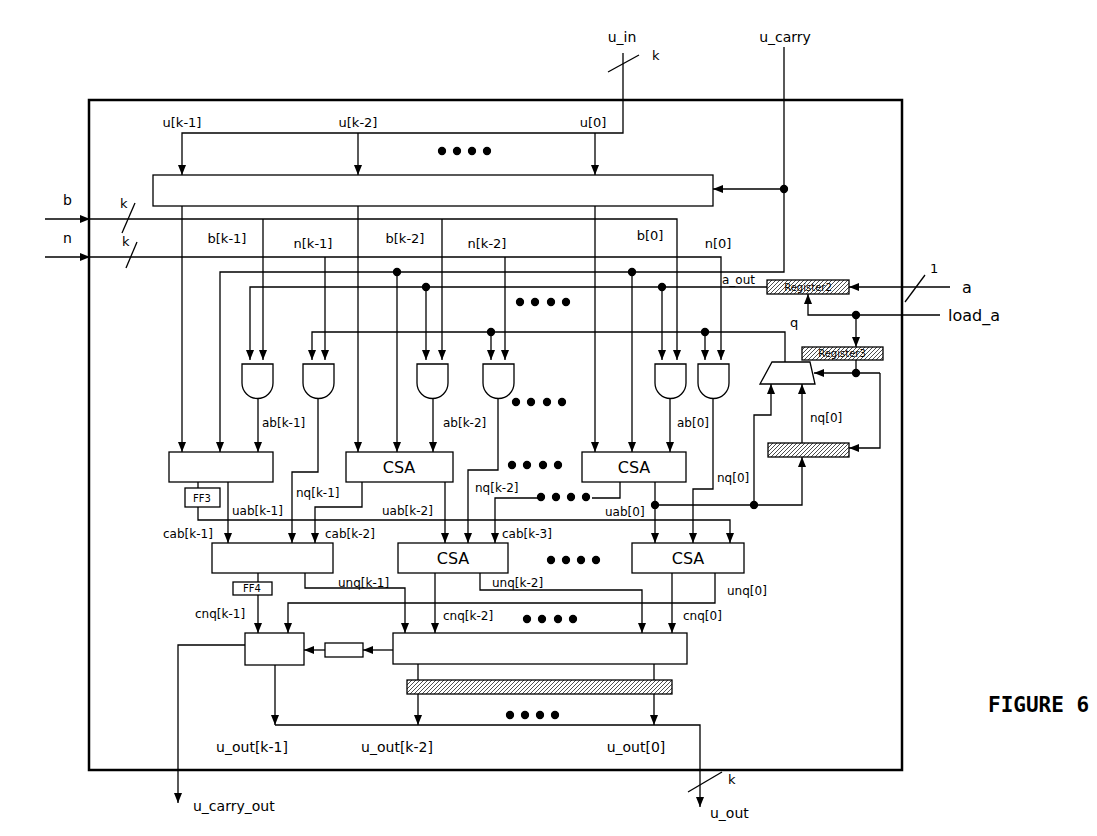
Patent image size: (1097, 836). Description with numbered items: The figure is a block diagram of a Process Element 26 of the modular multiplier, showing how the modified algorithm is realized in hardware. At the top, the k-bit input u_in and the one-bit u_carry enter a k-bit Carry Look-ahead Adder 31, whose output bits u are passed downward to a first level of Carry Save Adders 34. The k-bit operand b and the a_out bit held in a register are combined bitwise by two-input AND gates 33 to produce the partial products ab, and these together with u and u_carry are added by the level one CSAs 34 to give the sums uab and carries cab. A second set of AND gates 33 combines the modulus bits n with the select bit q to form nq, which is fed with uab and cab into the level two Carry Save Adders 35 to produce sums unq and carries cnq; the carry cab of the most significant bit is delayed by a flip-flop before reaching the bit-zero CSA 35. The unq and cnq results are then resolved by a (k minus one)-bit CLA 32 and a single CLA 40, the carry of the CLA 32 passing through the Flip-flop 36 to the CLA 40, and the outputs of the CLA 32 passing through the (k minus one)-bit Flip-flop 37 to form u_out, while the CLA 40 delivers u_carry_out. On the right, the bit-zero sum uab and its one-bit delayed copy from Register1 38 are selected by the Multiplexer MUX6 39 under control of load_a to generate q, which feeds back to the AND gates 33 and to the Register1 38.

The Process Element 26 is at (495, 435).
The k-bit Carry Look-ahead Adder 31 is at (433, 190).
The (k-1)-bit CLA 32 is at (540, 648).
The AND gates 33 is at (518, 378).
The level 1 Carry Save Adders 34 is at (167, 481).
The level 2 Carry Save Adders 35 is at (210, 557).
The Flip-flop FF5 36 is at (356, 660).
The (k-1)-bit Flip-flop FF6 37 is at (675, 687).
The Register1 38 is at (845, 460).
The Multiplexer MUX6 39 is at (768, 368).
The single CLA 40 is at (258, 668).